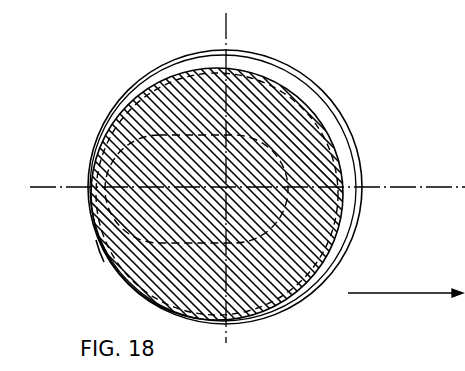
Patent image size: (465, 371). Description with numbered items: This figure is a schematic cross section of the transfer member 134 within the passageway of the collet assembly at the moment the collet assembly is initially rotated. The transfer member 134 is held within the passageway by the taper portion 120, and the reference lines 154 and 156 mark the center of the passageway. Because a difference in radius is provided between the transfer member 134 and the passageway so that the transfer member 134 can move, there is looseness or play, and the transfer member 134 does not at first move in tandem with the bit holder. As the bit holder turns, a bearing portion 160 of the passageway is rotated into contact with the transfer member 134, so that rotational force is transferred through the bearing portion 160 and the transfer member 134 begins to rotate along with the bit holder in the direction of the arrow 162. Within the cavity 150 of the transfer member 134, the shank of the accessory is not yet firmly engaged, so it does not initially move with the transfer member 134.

The taper portion 120 is at (152, 84).
The transfer member 134 is at (348, 202).
The cavity 150 is at (107, 269).
The reference line 154 is at (380, 189).
The reference line 156 is at (226, 22).
The bearing portion 160 is at (100, 256).
The arrow 162 is at (383, 294).